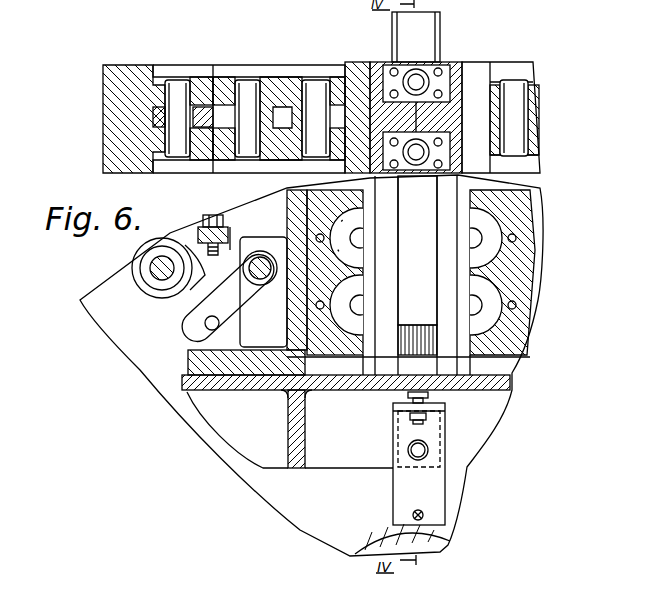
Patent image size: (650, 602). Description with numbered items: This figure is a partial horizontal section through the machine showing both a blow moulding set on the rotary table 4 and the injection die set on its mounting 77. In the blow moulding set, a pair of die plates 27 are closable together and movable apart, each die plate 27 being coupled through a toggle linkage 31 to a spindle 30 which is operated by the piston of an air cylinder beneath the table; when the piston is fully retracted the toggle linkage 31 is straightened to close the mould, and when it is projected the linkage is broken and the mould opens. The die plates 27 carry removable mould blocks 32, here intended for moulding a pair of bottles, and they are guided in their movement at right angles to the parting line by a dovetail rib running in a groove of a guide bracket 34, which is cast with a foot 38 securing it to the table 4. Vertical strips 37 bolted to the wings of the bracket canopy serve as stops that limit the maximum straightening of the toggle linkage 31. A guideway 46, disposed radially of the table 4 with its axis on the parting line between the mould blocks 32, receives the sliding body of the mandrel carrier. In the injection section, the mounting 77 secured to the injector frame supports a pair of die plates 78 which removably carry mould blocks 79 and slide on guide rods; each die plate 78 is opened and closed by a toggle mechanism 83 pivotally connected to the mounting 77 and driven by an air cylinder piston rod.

The table 4 is at (106, 290).
The die plates 27 is at (257, 368).
The spindle 30 is at (154, 284).
The toggle linkage 31 is at (193, 308).
The mould blocks 32 is at (334, 370).
The guide bracket 34 is at (496, 386).
The vertical strips 37 is at (232, 228).
The foot 38 is at (472, 421).
The guideway 46 is at (432, 230).
The mounting 77 is at (106, 118).
The die plates 78 is at (353, 74).
The mould blocks 79 is at (455, 63).
The toggle mechanism 83 is at (281, 76).